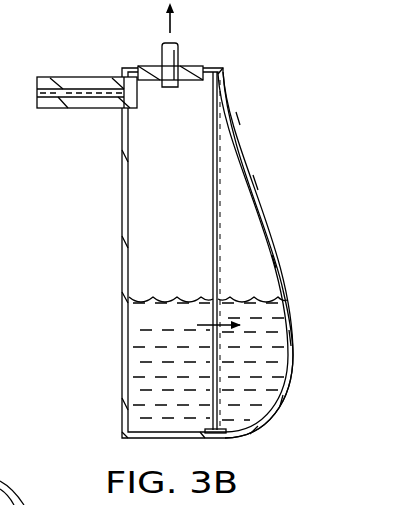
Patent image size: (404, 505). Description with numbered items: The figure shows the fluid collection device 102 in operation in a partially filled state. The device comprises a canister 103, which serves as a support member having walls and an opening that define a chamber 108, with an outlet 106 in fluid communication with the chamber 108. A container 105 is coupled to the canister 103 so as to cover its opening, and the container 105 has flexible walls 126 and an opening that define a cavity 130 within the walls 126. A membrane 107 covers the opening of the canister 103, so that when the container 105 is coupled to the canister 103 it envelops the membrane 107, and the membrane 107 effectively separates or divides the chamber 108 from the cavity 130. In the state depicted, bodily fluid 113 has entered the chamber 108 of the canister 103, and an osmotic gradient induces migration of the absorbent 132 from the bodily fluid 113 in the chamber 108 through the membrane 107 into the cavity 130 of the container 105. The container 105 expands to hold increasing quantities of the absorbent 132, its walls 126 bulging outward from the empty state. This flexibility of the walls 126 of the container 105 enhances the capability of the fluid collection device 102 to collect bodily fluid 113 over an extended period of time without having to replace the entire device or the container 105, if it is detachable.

The fluid collection device 102 is at (93, 221).
The canister 103 is at (118, 142).
The container 105 is at (298, 345).
The outlet 106 is at (180, 53).
The membrane 107 is at (218, 247).
The chamber 108 is at (192, 213).
The bodily fluid 113 is at (135, 323).
The walls 126 is at (250, 176).
The cavity 130 is at (269, 280).
The absorbent 132 is at (195, 326).